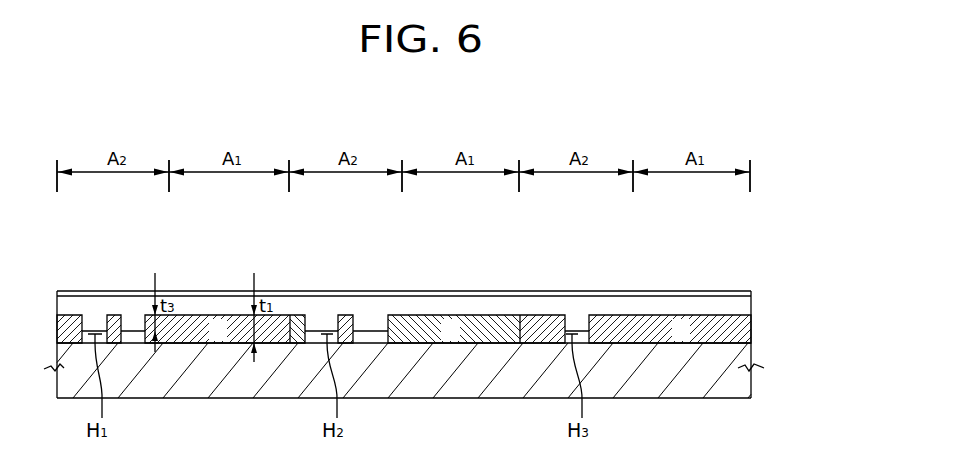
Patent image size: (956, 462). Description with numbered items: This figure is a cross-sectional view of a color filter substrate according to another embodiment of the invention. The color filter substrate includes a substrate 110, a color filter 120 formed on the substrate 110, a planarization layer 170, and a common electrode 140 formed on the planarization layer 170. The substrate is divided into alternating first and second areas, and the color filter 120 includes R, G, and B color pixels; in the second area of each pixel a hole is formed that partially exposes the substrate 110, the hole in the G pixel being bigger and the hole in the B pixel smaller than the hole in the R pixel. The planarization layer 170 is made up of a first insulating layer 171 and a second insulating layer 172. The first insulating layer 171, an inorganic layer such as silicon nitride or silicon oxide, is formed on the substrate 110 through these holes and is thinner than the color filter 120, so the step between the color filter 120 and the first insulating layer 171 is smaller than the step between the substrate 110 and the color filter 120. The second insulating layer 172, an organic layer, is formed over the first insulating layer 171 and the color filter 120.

The substrate 110 is at (680, 383).
The color filter 120 is at (751, 333).
The common electrode 140 is at (751, 293).
The planarization layer 170 is at (404, 274).
The first insulating layer 171 is at (132, 331).
The second insulating layer 172 is at (642, 298).